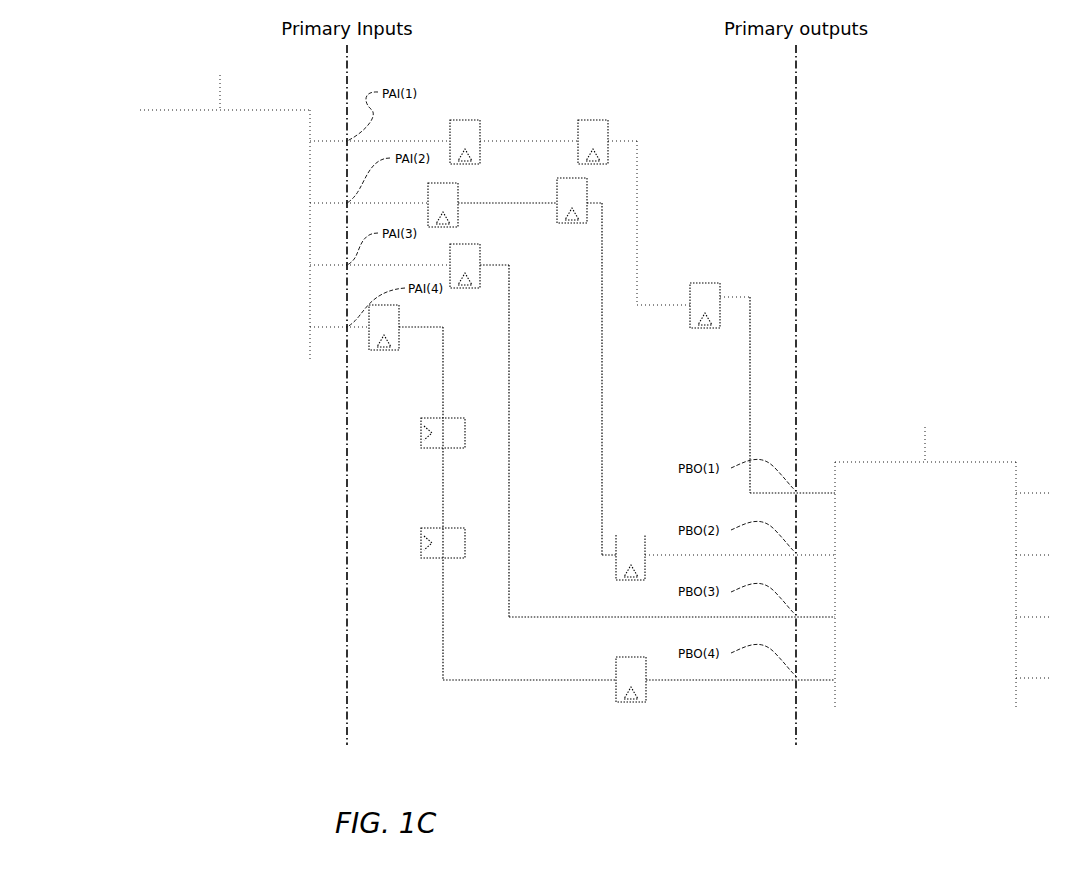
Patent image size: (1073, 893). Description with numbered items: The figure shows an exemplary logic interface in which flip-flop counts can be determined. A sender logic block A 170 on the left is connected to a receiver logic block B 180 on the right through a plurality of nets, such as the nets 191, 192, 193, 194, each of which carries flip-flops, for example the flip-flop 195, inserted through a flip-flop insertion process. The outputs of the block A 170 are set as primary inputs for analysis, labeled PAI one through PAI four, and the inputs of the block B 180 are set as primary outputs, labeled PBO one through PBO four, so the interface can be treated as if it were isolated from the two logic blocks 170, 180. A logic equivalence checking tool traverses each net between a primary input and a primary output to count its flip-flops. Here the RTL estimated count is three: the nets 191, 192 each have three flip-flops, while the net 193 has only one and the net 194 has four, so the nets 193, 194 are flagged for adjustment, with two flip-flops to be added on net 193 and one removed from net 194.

The sender logic block A 170 is at (241, 313).
The receiver logic block B 180 is at (908, 673).
The net 191 is at (637, 238).
The net 192 is at (602, 403).
The net 193 is at (509, 352).
The net 194 is at (443, 667).
The flip-flop 195 is at (462, 120).